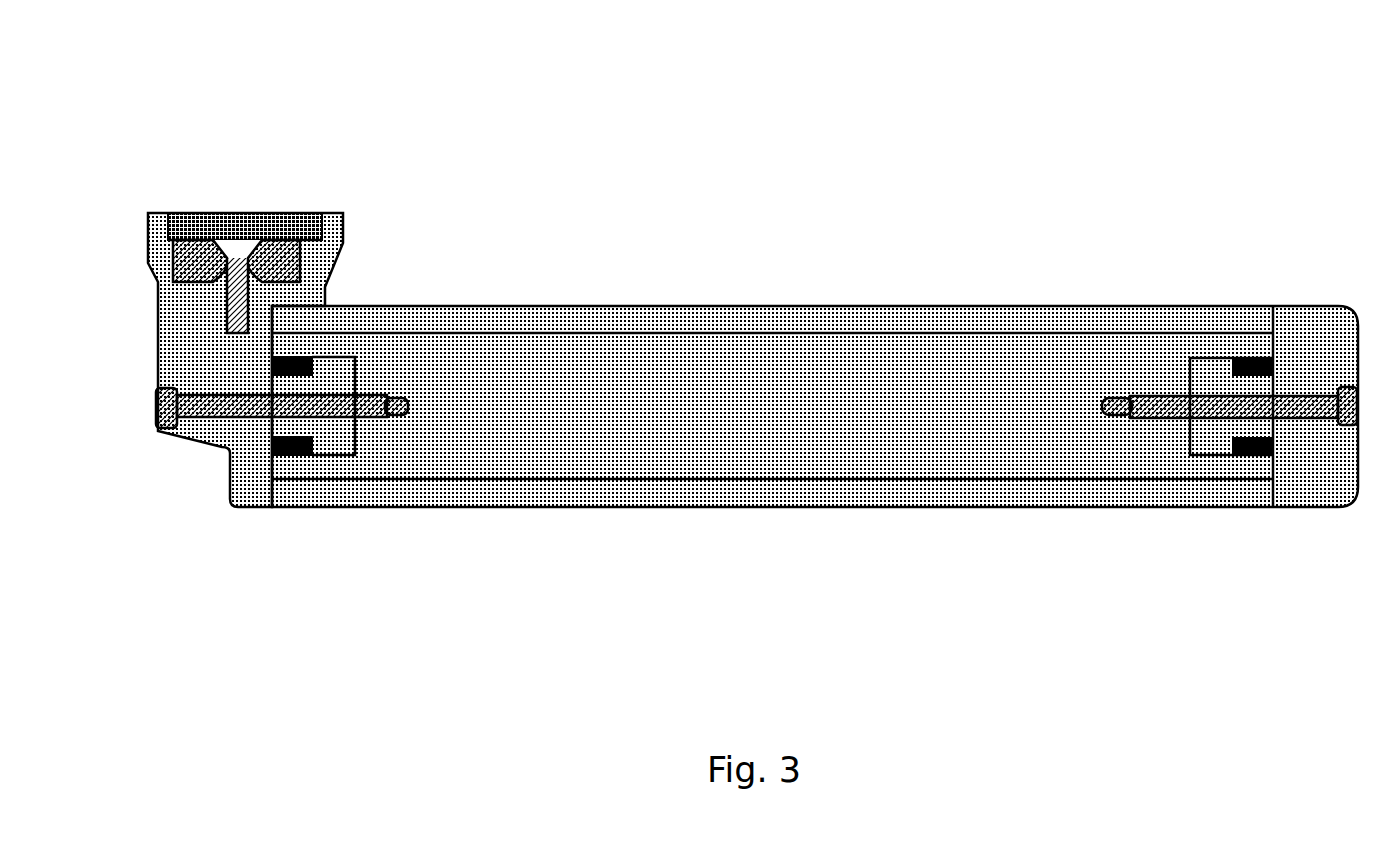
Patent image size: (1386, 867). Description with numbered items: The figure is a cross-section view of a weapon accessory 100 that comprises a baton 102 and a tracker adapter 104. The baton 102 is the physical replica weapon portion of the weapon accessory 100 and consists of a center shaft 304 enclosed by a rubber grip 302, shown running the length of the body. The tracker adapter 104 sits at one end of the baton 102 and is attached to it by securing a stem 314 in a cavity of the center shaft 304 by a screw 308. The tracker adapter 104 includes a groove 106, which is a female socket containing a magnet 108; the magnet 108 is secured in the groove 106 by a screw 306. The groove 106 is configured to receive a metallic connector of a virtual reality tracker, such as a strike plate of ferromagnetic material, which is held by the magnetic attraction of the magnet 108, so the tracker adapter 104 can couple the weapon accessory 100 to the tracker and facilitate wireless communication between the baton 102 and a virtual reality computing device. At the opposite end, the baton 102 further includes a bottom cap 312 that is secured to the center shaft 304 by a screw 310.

The weapon accessory 100 is at (753, 324).
The baton 102 is at (620, 290).
The tracker adapter 104 is at (262, 495).
The groove 106 is at (263, 215).
The magnet 108 is at (278, 238).
The rubber grip 302 is at (722, 315).
The center shaft 304 is at (717, 430).
The screw 306 is at (233, 242).
The screw 308 is at (328, 402).
The screw 310 is at (1153, 397).
The bottom cap 312 is at (1305, 490).
The stem 314 is at (337, 363).